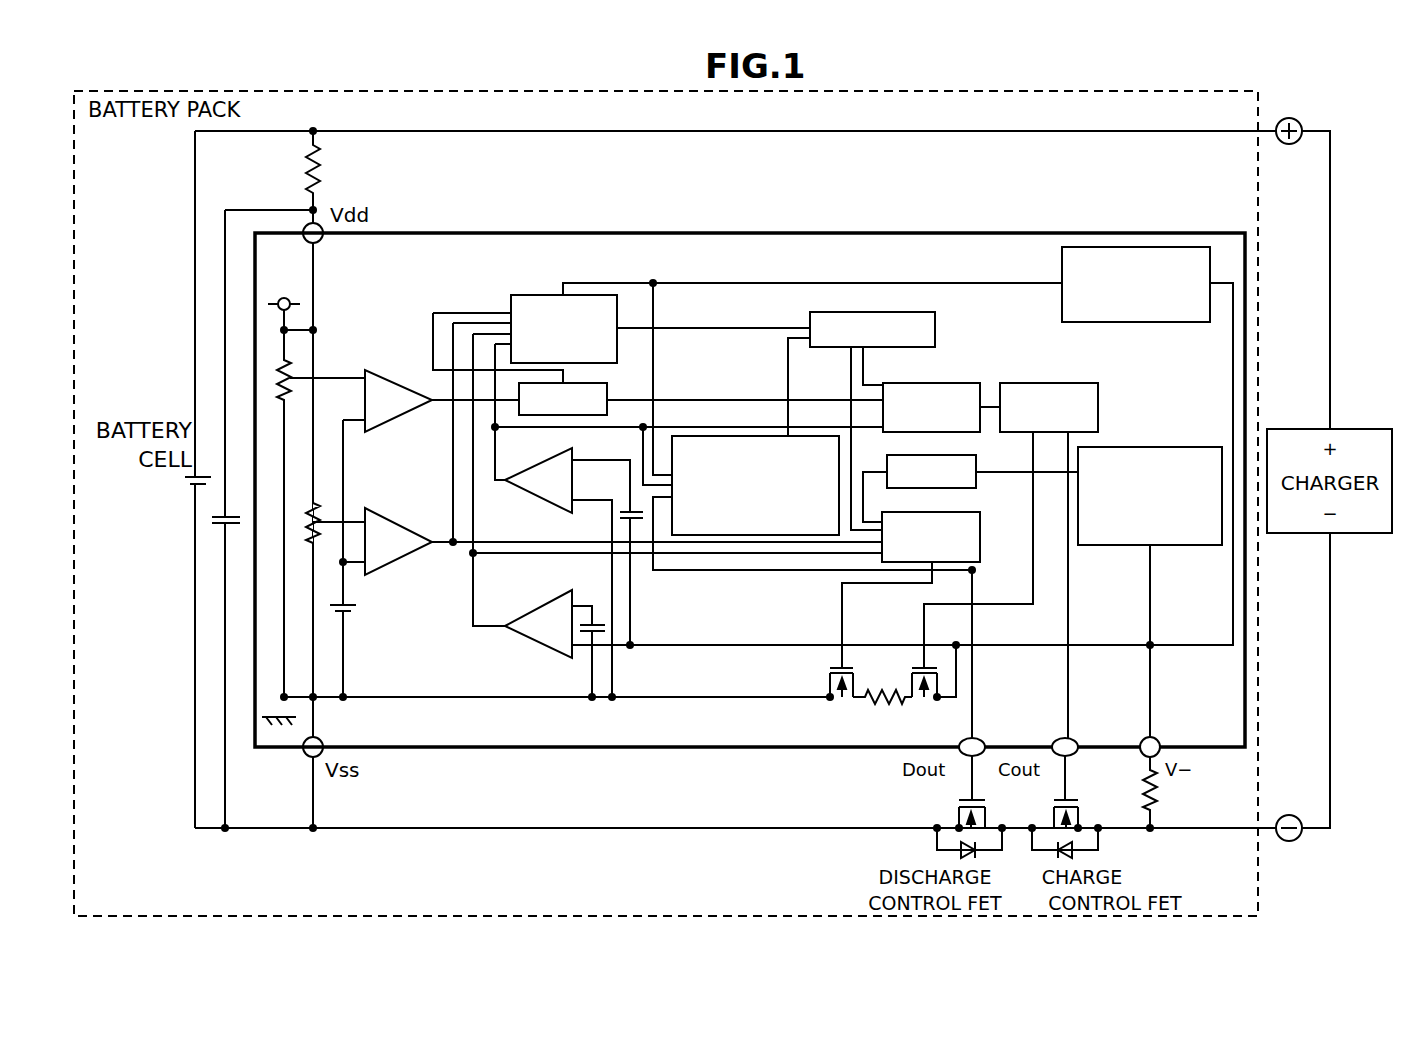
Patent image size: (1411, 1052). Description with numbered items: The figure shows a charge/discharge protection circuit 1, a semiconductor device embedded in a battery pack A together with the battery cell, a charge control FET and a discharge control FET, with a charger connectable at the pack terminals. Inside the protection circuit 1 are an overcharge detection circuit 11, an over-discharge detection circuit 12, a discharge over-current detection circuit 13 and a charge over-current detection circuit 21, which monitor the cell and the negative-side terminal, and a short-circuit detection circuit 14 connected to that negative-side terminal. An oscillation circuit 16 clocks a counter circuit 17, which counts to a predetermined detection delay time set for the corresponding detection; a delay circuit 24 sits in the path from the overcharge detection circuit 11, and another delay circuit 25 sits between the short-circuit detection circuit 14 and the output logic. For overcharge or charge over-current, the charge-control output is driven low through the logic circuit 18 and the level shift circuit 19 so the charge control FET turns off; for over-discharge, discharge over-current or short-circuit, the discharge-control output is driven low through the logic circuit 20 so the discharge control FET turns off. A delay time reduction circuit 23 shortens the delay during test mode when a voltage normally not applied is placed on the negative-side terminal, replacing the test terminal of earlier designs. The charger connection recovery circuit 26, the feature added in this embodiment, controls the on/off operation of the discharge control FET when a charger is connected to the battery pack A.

The charge/discharge protection circuit 1 is at (712, 233).
The overcharge detection circuit 11 is at (380, 372).
The over-discharge detection circuit 12 is at (378, 512).
The discharge over-current detection circuit 13 is at (540, 645).
The short-circuit detection circuit 14 is at (1155, 447).
The oscillation circuit 16 is at (535, 296).
The counter circuit 17 is at (937, 326).
The logic circuit 18 is at (938, 383).
The level shift circuit 19 is at (1050, 383).
The logic circuit 20 is at (980, 534).
The charge over-current detection circuit 21 is at (537, 500).
The delay time reduction circuit 23 is at (1062, 262).
The delay circuit 24 is at (607, 393).
The delay circuit 25 is at (976, 467).
The charger connection recovery circuit 26 is at (731, 436).
The battery pack A is at (385, 92).